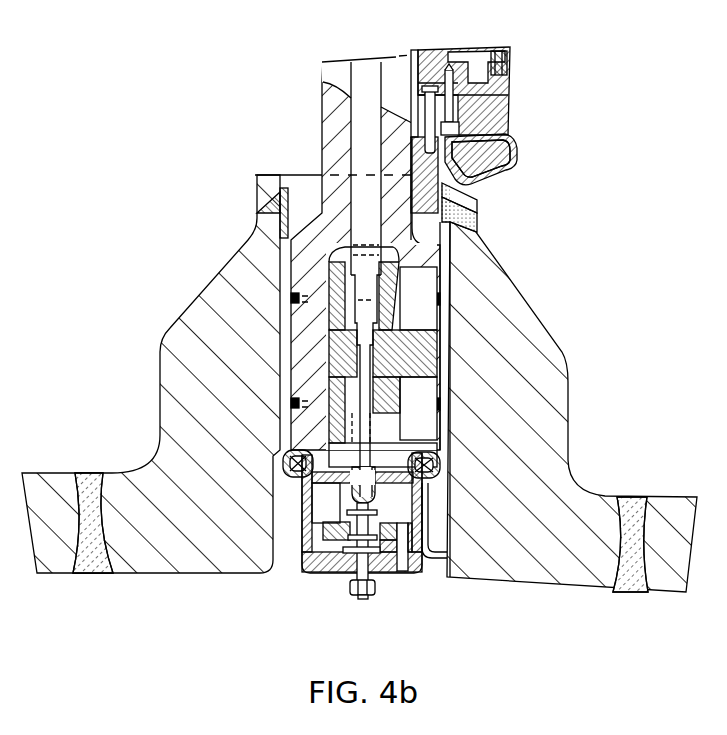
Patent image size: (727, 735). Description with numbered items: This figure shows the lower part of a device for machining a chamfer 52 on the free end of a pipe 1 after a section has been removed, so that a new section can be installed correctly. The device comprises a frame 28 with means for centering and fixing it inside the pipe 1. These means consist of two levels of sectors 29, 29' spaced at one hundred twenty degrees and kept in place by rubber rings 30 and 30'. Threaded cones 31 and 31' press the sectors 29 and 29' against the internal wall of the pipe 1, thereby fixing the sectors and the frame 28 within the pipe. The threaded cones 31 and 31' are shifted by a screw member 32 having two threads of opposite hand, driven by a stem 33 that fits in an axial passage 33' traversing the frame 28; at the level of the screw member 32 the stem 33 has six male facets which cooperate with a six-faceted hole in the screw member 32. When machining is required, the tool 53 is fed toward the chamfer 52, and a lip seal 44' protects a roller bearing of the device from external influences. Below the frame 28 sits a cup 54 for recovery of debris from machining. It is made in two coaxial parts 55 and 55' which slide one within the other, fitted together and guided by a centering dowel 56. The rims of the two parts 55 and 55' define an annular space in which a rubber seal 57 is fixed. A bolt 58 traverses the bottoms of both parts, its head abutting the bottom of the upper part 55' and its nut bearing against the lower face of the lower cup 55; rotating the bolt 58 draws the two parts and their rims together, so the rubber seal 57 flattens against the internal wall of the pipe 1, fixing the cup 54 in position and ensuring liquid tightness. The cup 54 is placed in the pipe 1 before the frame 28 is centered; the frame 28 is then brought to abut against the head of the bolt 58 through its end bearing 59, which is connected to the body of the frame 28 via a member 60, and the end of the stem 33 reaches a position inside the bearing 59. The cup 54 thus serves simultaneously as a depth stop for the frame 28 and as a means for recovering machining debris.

The pipe 1 is at (486, 275).
The frame 28 is at (312, 138).
The sectors 29 is at (456, 278).
The sectors 29' is at (443, 410).
The rubber ring 30 is at (456, 306).
The rubber ring 30' is at (460, 400).
The threaded cone 31 is at (286, 255).
The threaded cone 31' is at (288, 392).
The screw member 32 is at (375, 355).
The stem 33 is at (334, 282).
The axial passage 33' is at (325, 90).
The lip seal 44' is at (480, 100).
The chamfer 52 is at (477, 208).
The tool 53 is at (507, 135).
The cup 54 is at (426, 555).
The lower cup part 55 is at (362, 585).
The upper cup part 55' is at (348, 533).
The centering dowel 56 is at (400, 565).
The rubber seal 57 is at (436, 468).
The bolt 58 is at (363, 596).
The bearing 59 is at (352, 498).
The member 60 is at (318, 482).